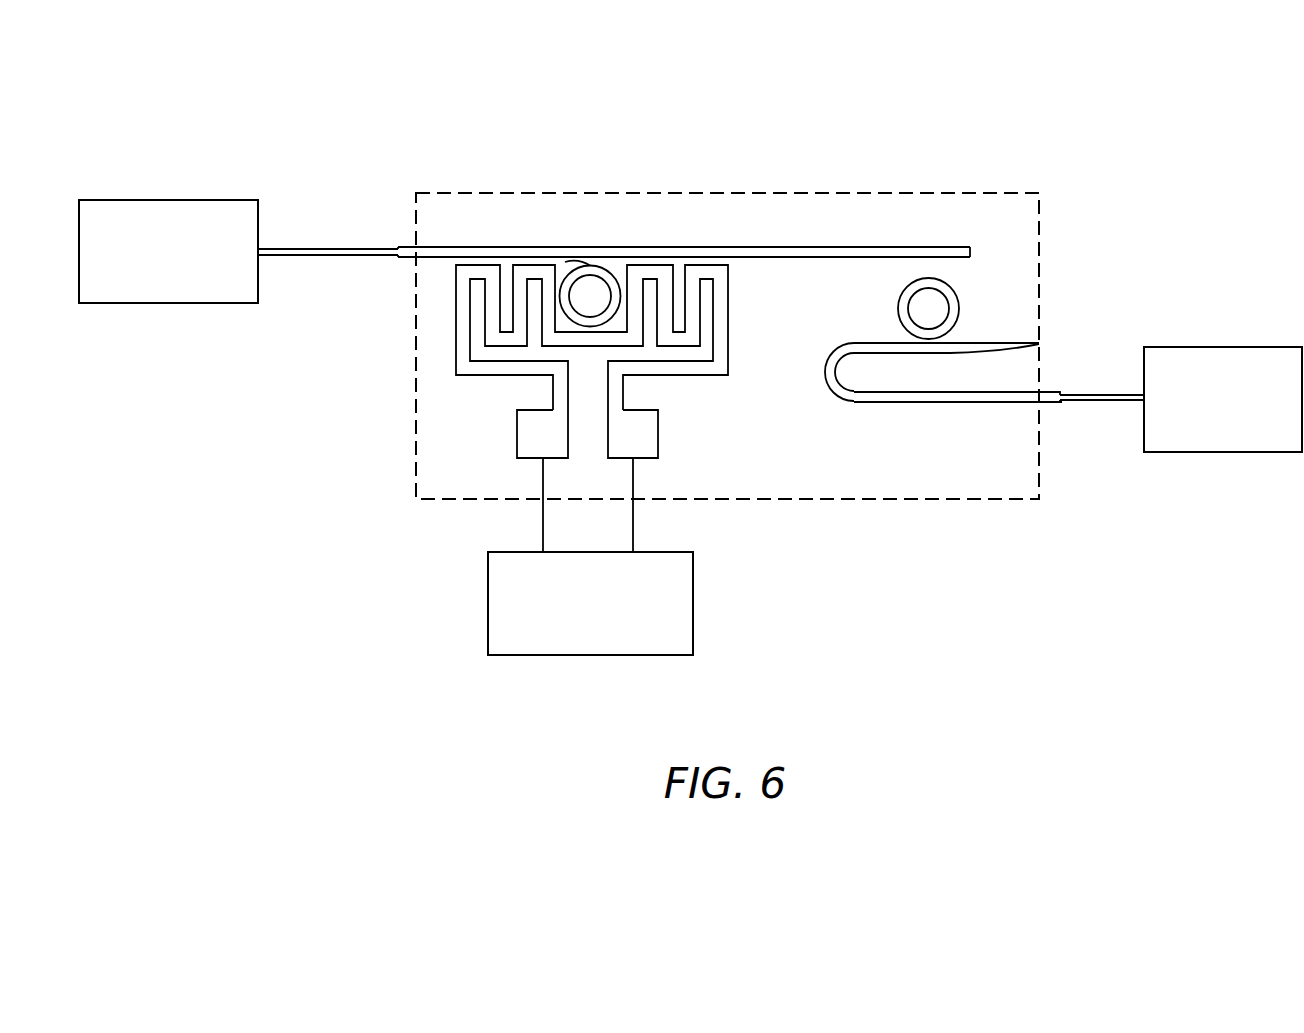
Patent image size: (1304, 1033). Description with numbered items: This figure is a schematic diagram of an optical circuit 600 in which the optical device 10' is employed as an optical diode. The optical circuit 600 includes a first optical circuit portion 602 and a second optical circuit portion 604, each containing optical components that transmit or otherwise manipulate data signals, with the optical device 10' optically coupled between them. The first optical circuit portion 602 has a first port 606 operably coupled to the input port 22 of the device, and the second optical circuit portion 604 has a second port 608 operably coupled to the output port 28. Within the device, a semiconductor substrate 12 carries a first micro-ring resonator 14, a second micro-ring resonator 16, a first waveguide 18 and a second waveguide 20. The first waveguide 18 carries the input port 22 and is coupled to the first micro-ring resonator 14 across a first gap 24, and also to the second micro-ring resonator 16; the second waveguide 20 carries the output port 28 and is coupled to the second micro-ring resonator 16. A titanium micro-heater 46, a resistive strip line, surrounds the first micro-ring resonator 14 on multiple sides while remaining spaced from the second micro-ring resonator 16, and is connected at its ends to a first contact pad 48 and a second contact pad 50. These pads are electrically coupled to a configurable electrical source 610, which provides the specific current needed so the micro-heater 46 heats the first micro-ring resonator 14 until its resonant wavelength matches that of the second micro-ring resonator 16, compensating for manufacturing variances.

The optical circuit 600 is at (974, 99).
The first optical circuit portion 602 is at (183, 200).
The second optical circuit portion 604 is at (1232, 347).
The first port 606 is at (398, 248).
The second port 608 is at (1063, 393).
The configurable electrical source 610 is at (693, 602).
The optical device 10' is at (722, 342).
The semiconductor substrate 12 is at (1040, 213).
The first micro-ring resonator 14 is at (603, 268).
The second micro-ring resonator 16 is at (957, 292).
The first waveguide 18 is at (840, 247).
The second waveguide 20 is at (930, 403).
The input port 22 is at (407, 257).
The first gap 24 is at (583, 260).
The output port 28 is at (1053, 402).
The titanium micro-heater 46 is at (456, 332).
The first contact pad 48 is at (517, 435).
The second contact pad 50 is at (658, 435).